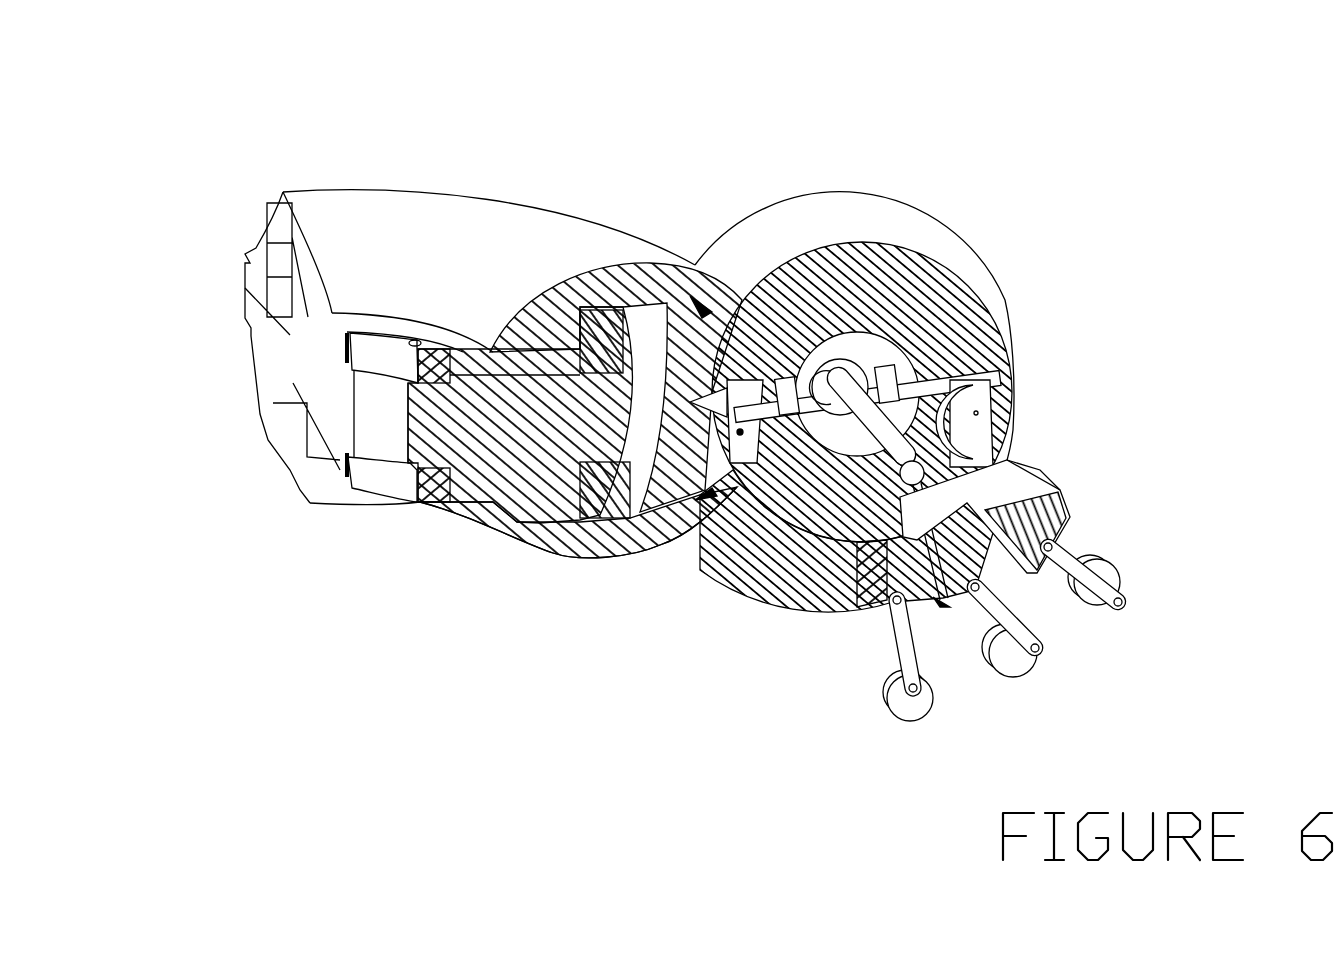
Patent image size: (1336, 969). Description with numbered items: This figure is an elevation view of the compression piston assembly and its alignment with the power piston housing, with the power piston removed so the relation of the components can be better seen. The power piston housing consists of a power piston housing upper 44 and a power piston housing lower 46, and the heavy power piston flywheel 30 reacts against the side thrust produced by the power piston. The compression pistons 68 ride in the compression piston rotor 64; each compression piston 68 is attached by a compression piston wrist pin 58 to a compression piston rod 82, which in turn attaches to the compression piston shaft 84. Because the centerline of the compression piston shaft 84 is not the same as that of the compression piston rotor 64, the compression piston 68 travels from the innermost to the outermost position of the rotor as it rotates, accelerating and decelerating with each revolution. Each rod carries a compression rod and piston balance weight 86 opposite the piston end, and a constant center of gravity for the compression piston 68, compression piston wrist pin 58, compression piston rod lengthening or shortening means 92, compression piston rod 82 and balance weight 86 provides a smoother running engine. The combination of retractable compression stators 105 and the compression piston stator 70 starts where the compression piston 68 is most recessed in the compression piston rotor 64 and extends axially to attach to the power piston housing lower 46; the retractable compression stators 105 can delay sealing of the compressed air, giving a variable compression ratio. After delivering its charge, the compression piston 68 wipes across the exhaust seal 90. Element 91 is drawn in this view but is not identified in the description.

The power piston flywheel 30 is at (457, 427).
The power piston housing upper 44 is at (538, 325).
The power piston housing lower 46 is at (546, 512).
The compression piston wrist pin 58 is at (740, 434).
The compression piston rotor 64 is at (960, 313).
The compression piston 68 is at (692, 300).
The compression piston stator 70 is at (797, 573).
The compression piston rod 82 is at (928, 348).
The compression piston shaft 84 is at (918, 404).
The compression rod and piston balance weight 86 is at (828, 378).
The exhaust seal 90 is at (703, 500).
The seal 91 is at (708, 283).
The compression piston rod lengthening or shortening means 92 is at (795, 352).
The retractable compression stators 105 is at (1083, 597).